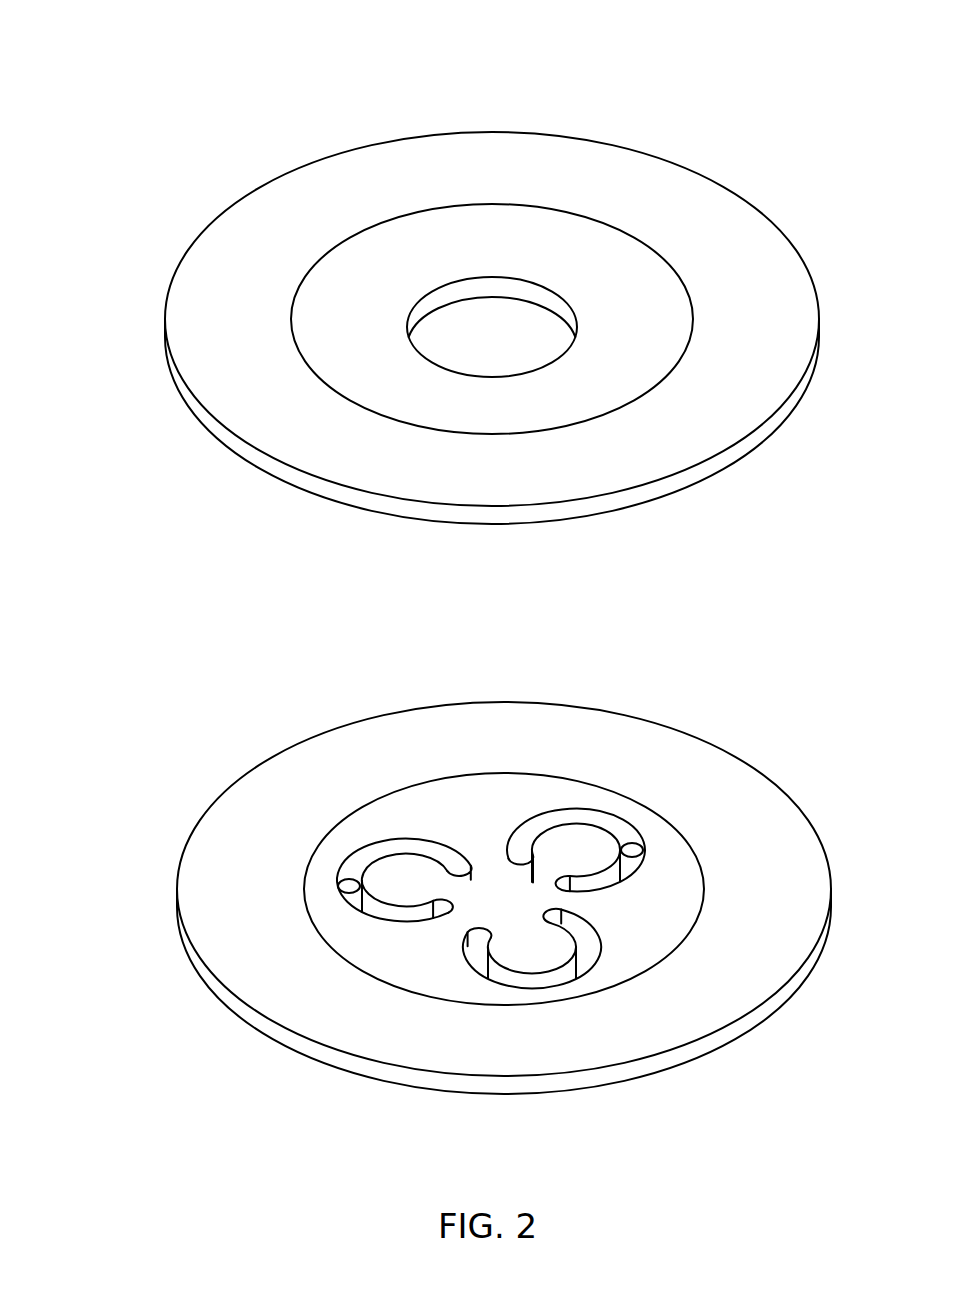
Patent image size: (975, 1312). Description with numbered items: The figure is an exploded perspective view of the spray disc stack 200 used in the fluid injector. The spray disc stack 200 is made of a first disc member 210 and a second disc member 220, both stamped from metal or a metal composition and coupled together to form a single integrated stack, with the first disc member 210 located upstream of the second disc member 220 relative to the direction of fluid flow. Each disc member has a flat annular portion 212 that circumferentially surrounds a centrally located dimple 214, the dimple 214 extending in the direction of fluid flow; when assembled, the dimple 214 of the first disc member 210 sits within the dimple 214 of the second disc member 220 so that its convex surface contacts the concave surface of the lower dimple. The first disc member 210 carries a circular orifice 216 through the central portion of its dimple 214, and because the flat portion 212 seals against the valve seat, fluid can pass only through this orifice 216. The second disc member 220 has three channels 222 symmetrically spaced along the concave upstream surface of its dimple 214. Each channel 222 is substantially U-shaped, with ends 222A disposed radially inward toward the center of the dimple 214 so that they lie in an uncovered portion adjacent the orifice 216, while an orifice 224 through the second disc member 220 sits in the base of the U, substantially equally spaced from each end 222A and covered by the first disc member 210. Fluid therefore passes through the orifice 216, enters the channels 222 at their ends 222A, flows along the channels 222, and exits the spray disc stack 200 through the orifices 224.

The spray disc stack 200 is at (100, 56).
The first disc member 210 is at (196, 240).
The flat annular portion 212 is at (717, 215).
The dimple 214 is at (318, 330).
The orifice 216 is at (440, 322).
The second disc member 220 is at (673, 722).
The channel 222 is at (592, 808).
The channel end 222A is at (522, 824).
The orifice 224 is at (342, 887).